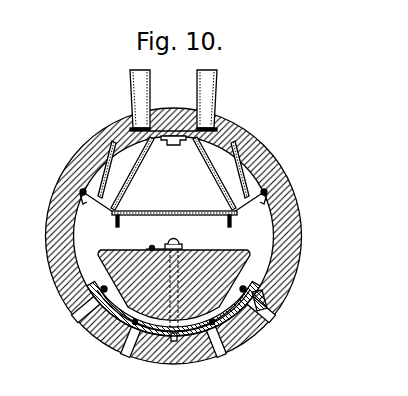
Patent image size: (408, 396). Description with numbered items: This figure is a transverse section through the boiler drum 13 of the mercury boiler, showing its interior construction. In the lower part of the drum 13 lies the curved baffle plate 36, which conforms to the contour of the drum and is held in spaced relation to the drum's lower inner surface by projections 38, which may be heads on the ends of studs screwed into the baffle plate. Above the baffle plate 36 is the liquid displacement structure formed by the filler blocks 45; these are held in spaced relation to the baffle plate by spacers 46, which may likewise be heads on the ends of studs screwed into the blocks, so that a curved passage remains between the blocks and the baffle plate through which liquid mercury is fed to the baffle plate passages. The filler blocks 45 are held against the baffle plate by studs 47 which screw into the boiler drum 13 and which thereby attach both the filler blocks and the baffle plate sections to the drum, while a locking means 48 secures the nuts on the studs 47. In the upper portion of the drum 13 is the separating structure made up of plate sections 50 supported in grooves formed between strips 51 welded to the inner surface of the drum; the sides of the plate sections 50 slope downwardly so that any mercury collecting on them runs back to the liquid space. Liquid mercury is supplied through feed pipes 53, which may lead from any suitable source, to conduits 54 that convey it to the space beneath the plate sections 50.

The boiler drum 13 is at (299, 191).
The baffle plate 36 is at (258, 290).
The projections 38 is at (127, 325).
The filler blocks 45 is at (233, 252).
The spacers 46 is at (228, 313).
The studs 47 is at (190, 252).
The locking means 48 is at (152, 247).
The plate sections 50 is at (150, 210).
The strips 51 is at (172, 207).
The feed pipes 53 is at (198, 98).
The conduits 54 is at (215, 178).